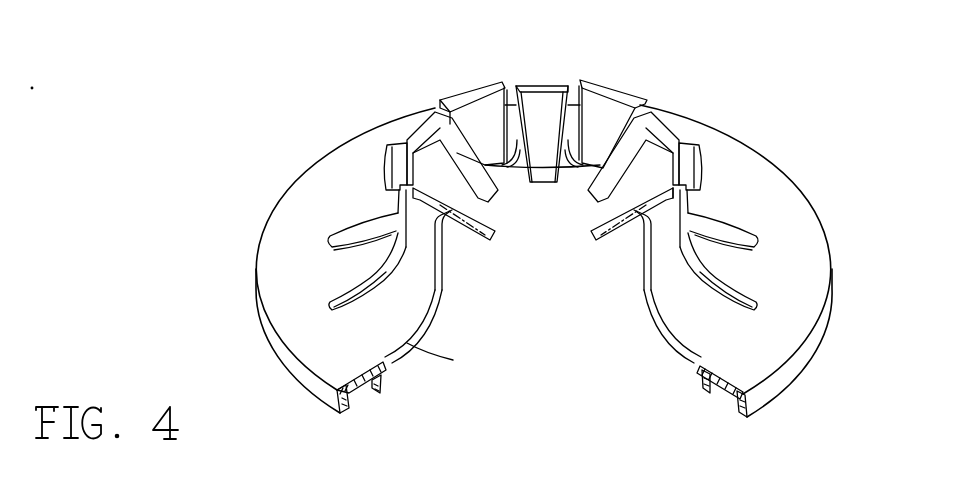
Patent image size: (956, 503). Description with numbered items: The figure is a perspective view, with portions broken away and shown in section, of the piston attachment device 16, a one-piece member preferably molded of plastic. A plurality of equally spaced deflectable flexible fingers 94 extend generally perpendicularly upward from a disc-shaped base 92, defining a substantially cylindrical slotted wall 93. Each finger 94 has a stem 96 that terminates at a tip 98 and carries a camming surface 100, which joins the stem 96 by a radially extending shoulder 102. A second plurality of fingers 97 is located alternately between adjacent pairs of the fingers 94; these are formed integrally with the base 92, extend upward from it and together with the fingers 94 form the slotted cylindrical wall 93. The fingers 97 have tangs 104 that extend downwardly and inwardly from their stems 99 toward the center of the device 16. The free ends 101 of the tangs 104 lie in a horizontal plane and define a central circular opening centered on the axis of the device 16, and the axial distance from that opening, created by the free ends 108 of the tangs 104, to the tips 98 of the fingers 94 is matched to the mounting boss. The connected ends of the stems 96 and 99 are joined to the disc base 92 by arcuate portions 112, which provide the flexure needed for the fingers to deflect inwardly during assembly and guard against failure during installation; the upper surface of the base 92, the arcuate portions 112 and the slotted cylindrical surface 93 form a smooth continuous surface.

The piston attachment device 16 is at (312, 156).
The base 92 is at (273, 258).
The slotted cylindrical wall 93 is at (434, 297).
The deflectable flexible fingers 94 is at (507, 88).
The stem 96 is at (397, 202).
The second plurality of fingers 97 is at (647, 291).
The tip 98 is at (600, 85).
The stem 99 is at (680, 317).
The camming surface 100 is at (700, 168).
The free ends 101 is at (593, 233).
The radially extending shoulder 102 is at (688, 206).
The tangs 104 is at (463, 228).
The free ends 108 is at (538, 183).
The arcuate portions 112 is at (410, 342).